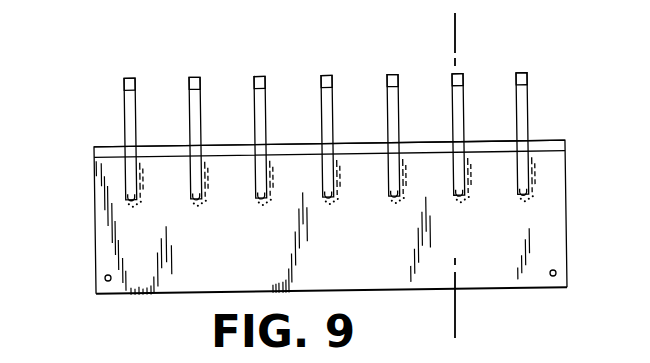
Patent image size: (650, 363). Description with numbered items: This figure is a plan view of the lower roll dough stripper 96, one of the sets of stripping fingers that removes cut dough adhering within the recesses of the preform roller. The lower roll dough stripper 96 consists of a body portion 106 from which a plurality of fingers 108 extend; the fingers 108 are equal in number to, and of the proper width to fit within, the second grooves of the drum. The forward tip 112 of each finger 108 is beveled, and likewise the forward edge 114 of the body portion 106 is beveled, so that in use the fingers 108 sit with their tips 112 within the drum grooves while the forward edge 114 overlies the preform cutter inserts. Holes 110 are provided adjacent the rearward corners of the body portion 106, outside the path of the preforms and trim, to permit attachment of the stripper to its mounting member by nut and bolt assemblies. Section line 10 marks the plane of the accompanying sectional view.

The section line 10- 10 is at (446, 22).
The lower roll dough stripper 96 is at (107, 230).
The body portion 106 is at (487, 268).
The fingers 108 is at (128, 106).
The holes 110 is at (104, 277).
The forward tip 112 is at (192, 79).
The forward edge 114 is at (222, 150).